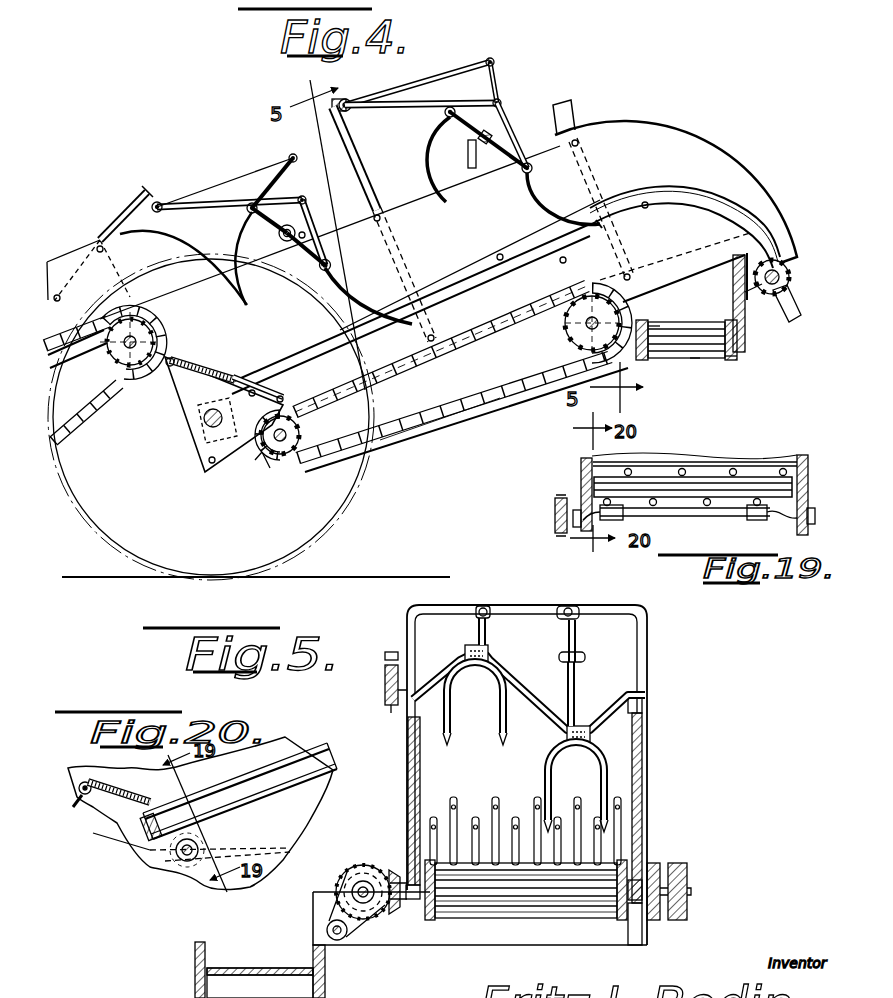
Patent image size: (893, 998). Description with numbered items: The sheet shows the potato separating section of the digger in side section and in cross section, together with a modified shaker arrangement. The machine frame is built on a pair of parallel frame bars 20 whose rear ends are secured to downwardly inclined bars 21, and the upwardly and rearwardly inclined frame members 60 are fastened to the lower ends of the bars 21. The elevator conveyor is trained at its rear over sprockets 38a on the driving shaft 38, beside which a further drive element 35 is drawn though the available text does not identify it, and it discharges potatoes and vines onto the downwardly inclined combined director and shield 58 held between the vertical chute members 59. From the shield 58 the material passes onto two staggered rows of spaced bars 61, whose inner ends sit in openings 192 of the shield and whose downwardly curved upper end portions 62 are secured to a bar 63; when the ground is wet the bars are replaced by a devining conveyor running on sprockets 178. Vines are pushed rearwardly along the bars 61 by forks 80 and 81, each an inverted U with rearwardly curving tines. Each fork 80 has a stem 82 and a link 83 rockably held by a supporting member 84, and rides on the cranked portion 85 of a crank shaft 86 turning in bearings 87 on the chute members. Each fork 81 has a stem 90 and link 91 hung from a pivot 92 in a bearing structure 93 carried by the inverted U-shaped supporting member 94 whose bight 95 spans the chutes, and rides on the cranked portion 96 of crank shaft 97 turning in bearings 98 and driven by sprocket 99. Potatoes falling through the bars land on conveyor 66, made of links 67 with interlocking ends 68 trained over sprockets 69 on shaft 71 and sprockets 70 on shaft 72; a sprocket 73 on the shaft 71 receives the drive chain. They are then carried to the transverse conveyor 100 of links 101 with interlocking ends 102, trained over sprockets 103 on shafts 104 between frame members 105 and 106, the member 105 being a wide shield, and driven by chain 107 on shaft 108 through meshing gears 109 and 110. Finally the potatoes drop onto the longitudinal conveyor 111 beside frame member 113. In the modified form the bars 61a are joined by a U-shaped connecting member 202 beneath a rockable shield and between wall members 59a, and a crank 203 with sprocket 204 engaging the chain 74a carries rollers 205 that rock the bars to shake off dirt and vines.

In FIG. 4, the frame bars 20 is at (87, 360).
In FIG. 4, the downwardly inclined bars 21 is at (188, 444).
In FIG. 4, the drive chain 35 is at (97, 420).
In FIG. 4, the shaft 38 is at (160, 336).
In FIG. 4, the sprockets 38a is at (143, 380).
In FIG. 4, the combined director and shield 58 is at (210, 368).
In FIG. 20, the combined director and shield 58 is at (80, 802).
In FIG. 4, the chute members 59 is at (660, 135).
In FIG. 19, the chute or wall members 59a is at (583, 480).
In FIG. 20, the chute or wall members 59a is at (200, 813).
In FIG. 4, the frame members 60 is at (685, 278).
In FIG. 4, the spaced bars 61 is at (458, 278).
In FIG. 5, the spaced bars 61 is at (580, 850).
In FIG. 19, the bars 61a is at (732, 470).
In FIG. 20, the bars 61a is at (257, 791).
In FIG. 4, the downwardly curved upper end portions 62 is at (724, 210).
In FIG. 4, the bar 63 is at (790, 278).
In FIG. 5, the bar 63 is at (526, 918).
In FIG. 4, the conveyor 66 is at (515, 410).
In FIG. 5, the conveyor 66 is at (580, 922).
In FIG. 4, the bars or links 67 is at (444, 447).
In FIG. 5, the bars or links 67 is at (474, 920).
In FIG. 4, the interlocking ends 68 is at (476, 430).
In FIG. 5, the interlocking ends 68 is at (430, 915).
In FIG. 4, the sprockets 69 is at (553, 353).
In FIG. 4, the sprockets 70 is at (303, 431).
In FIG. 4, the shaft 71 is at (598, 323).
In FIG. 5, the shaft 71 is at (692, 893).
In FIG. 4, the shaft 72 is at (256, 457).
In FIG. 5, the sprocket 73 is at (660, 868).
In FIG. 20, the chain 74a is at (273, 847).
In FIG. 4, the forks 80 is at (342, 301).
In FIG. 4, the forks 81 is at (547, 208).
In FIG. 5, the forks 81 is at (497, 712).
In FIG. 4, the stem 82 is at (313, 233).
In FIG. 4, the link 83 is at (232, 203).
In FIG. 4, the supporting member 84 is at (158, 205).
In FIG. 4, the cranked portion 85 is at (332, 265).
In FIG. 4, the crank shaft 86 is at (291, 228).
In FIG. 4, the bearings 87 is at (280, 238).
In FIG. 4, the stem 90 is at (512, 111).
In FIG. 5, the stem 90 is at (490, 629).
In FIG. 4, the link 91 is at (464, 68).
In FIG. 5, the link 91 is at (582, 645).
In FIG. 4, the pivot 92 is at (351, 102).
In FIG. 5, the pivot 92 is at (500, 612).
In FIG. 4, the bearing structure 93 is at (351, 111).
In FIG. 5, the bearing structure 93 is at (492, 610).
In FIG. 4, the supporting member 94 is at (336, 137).
In FIG. 5, the supporting member 94 is at (648, 663).
In FIG. 5, the bight 95 is at (565, 606).
In FIG. 4, the cranked portion 96 is at (534, 169).
In FIG. 5, the cranked portion 96 is at (458, 652).
In FIG. 4, the crank shaft 97 is at (506, 160).
In FIG. 4, the bearings 98 is at (470, 159).
In FIG. 5, the bearings 98 is at (648, 708).
In FIG. 5, the sprocket 99 is at (385, 692).
In FIG. 4, the transverse conveyor 100 is at (693, 367).
In FIG. 4, the bars or links 101 is at (673, 365).
In FIG. 4, the interlocking ends 102 is at (730, 363).
In FIG. 4, the sprockets 103 is at (717, 362).
In FIG. 4, the shafts 104 is at (690, 340).
In FIG. 4, the frame member 105 is at (746, 346).
In FIG. 4, the frame member 106 is at (642, 358).
In FIG. 5, the chain 107 is at (357, 932).
In FIG. 5, the shaft 108 is at (366, 880).
In FIG. 5, the gear 109 is at (350, 870).
In FIG. 5, the gear 110 is at (394, 880).
In FIG. 5, the longitudinal conveyor 111 is at (266, 967).
In FIG. 5, the frame member 113 is at (195, 970).
In FIG. 4, the sprockets 178 is at (781, 306).
In FIG. 4, the openings 192 is at (246, 375).
In FIG. 19, the U-shaped connecting member 202 is at (668, 474).
In FIG. 20, the U-shaped connecting member 202 is at (160, 840).
In FIG. 19, the crank 203 is at (720, 519).
In FIG. 19, the sprocket 204 is at (553, 515).
In FIG. 19, the rollers 205 is at (777, 520).